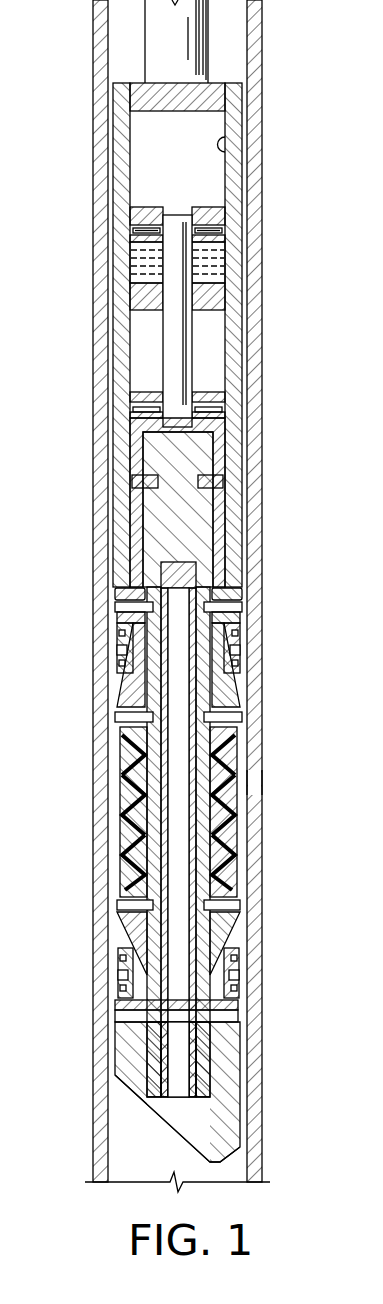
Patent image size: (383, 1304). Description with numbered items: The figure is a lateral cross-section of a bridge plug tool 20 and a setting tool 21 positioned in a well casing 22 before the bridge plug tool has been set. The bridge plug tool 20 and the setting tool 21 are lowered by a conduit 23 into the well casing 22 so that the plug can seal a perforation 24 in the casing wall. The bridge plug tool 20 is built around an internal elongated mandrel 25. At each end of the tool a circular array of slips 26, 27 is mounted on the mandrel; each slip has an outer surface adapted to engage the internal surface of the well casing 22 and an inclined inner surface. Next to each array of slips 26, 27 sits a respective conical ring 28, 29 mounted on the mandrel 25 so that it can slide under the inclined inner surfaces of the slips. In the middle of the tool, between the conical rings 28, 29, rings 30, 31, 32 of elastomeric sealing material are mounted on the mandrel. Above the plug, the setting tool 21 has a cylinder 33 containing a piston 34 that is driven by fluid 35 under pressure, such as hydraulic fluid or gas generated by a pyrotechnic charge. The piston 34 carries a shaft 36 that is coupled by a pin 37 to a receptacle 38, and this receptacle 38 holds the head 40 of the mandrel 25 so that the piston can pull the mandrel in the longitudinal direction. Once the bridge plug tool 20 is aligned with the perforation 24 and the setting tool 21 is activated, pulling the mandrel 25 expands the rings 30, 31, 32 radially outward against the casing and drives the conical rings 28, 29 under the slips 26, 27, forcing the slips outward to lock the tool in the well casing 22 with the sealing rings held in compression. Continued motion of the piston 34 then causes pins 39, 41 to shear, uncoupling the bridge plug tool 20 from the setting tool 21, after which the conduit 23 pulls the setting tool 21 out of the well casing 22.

The bridge plug tool 20 is at (240, 735).
The setting tool 21 is at (245, 183).
The well casing 22 is at (262, 63).
The conduit 23 is at (198, 33).
The perforation 24 is at (255, 782).
The mandrel 25 is at (205, 848).
The slips 26 is at (240, 638).
The slips 27 is at (240, 978).
The conical ring 28 is at (222, 700).
The conical ring 29 is at (222, 922).
The ring of elastomeric sealing material 30 is at (228, 765).
The ring of elastomeric sealing material 31 is at (230, 817).
The ring of elastomeric sealing material 32 is at (220, 875).
The cylinder 33 is at (226, 143).
The piston 34 is at (217, 218).
The fluid 35 is at (217, 263).
The shaft 36 is at (185, 357).
The pin 37 is at (220, 408).
The receptacle 38 is at (218, 437).
The pin 39 is at (213, 483).
The head 40 is at (210, 538).
The pin 41 is at (143, 483).